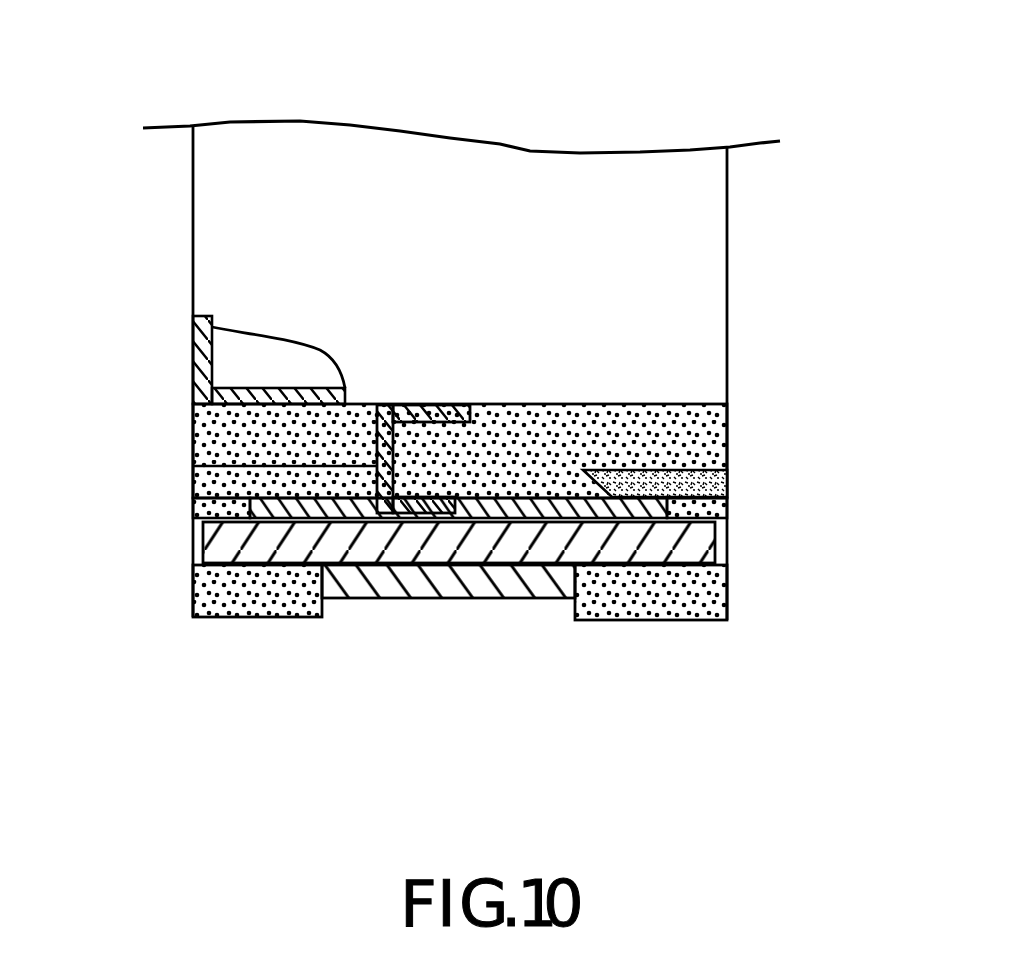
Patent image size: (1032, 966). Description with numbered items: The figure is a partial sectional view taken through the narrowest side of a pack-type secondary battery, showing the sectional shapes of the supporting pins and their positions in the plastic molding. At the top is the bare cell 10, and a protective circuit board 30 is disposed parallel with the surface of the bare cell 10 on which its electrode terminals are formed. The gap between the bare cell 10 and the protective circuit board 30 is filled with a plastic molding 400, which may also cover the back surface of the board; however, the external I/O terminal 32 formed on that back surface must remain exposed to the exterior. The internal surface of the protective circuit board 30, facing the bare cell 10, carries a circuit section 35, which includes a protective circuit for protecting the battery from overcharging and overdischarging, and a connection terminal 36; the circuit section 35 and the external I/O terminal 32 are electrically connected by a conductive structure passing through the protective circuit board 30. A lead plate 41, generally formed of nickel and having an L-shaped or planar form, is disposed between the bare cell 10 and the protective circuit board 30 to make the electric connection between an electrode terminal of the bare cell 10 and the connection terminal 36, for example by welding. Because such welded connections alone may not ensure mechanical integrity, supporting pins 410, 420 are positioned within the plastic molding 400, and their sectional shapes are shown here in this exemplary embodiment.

The bare cell 10 is at (528, 170).
The protective circuit board 30 is at (255, 556).
The external I/O terminal 32 is at (399, 588).
The circuit section 35 is at (553, 500).
The connection terminal 36 is at (380, 461).
The lead plate 41 is at (470, 432).
The plastic molding 400 is at (693, 443).
The supporting pin 410 is at (225, 469).
The supporting pin 420 is at (690, 488).